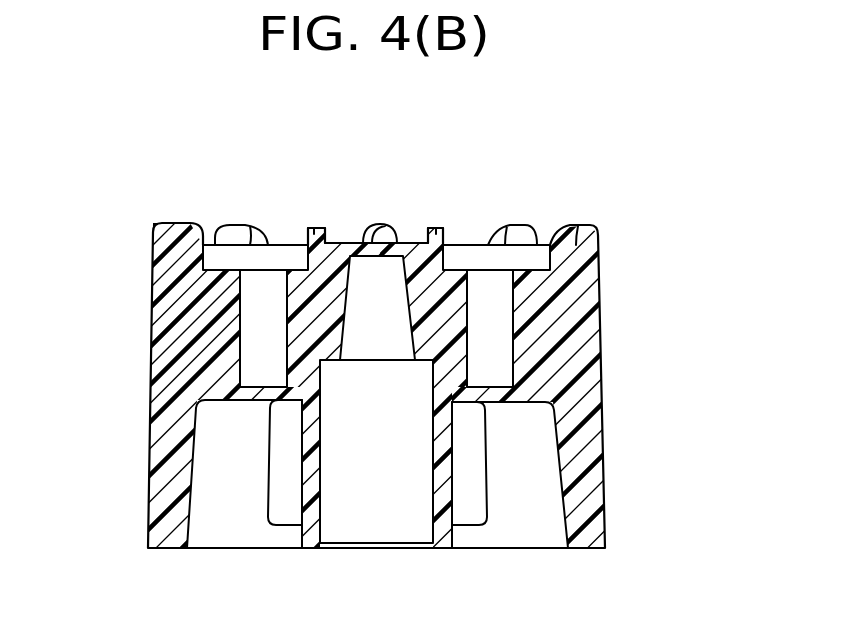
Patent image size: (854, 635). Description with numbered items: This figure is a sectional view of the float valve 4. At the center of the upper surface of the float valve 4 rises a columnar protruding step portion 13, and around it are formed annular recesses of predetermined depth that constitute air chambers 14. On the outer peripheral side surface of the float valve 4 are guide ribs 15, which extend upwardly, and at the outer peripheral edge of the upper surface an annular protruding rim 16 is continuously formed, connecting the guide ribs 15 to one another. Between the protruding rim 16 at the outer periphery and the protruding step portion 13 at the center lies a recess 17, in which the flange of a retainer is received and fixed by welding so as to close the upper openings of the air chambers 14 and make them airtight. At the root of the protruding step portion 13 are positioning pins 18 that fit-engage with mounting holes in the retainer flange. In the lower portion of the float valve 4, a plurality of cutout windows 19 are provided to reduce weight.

The float valve 4 is at (580, 397).
The protruding step portion 13 is at (408, 245).
The air chambers 14 is at (255, 332).
The guide ribs 15 is at (227, 225).
The protruding rim 16 is at (280, 240).
The recess 17 is at (513, 258).
The positioning pins 18 is at (318, 228).
The cutout windows 19 is at (276, 488).